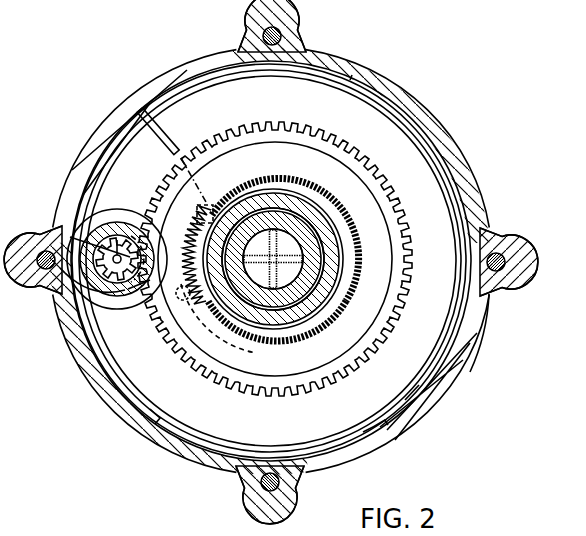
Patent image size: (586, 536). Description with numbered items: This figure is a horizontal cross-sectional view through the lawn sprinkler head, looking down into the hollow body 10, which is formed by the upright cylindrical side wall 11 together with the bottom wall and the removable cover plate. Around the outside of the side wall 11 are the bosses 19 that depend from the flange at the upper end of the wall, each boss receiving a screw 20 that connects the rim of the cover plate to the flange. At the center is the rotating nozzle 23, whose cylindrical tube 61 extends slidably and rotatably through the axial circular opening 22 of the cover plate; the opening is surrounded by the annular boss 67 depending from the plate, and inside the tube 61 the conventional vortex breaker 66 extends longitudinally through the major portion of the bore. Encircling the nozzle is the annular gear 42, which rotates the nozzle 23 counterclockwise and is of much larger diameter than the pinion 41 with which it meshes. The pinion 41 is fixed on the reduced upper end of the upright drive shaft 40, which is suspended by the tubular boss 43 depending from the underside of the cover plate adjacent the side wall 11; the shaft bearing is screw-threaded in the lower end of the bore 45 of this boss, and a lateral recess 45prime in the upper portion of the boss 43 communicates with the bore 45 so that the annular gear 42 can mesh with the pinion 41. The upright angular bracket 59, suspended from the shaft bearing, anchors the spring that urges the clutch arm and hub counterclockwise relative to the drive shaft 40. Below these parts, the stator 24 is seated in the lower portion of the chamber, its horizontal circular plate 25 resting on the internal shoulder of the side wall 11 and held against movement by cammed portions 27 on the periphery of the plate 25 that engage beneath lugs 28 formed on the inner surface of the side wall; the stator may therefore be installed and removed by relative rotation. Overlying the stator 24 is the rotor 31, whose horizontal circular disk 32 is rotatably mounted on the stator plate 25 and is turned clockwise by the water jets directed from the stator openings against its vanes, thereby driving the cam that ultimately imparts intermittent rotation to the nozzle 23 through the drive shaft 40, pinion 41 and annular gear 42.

The hollow body 10 is at (386, 80).
The side wall 11 is at (478, 350).
The bosses 19 is at (294, 28).
The screws 20 is at (510, 262).
The pinion 41 is at (97, 272).
The axial circular opening 22 is at (262, 200).
The rotating nozzle 23 is at (333, 291).
The stator 24 is at (153, 411).
The circular plate 25 is at (190, 90).
The cammed portions 27 is at (446, 185).
The lugs 28 is at (373, 441).
The rotor 31 is at (405, 140).
The circular disk 32 is at (413, 391).
The drive shaft 40 is at (132, 225).
The annular gear 42 is at (366, 160).
The tubular boss 43 is at (100, 203).
The bore 45 is at (73, 230).
The lateral recess 45prime is at (125, 301).
The angular bracket 59 is at (160, 124).
The cylindrical tube 61 is at (327, 237).
The vortex breaker 66 is at (311, 221).
The annular boss 67 is at (312, 317).